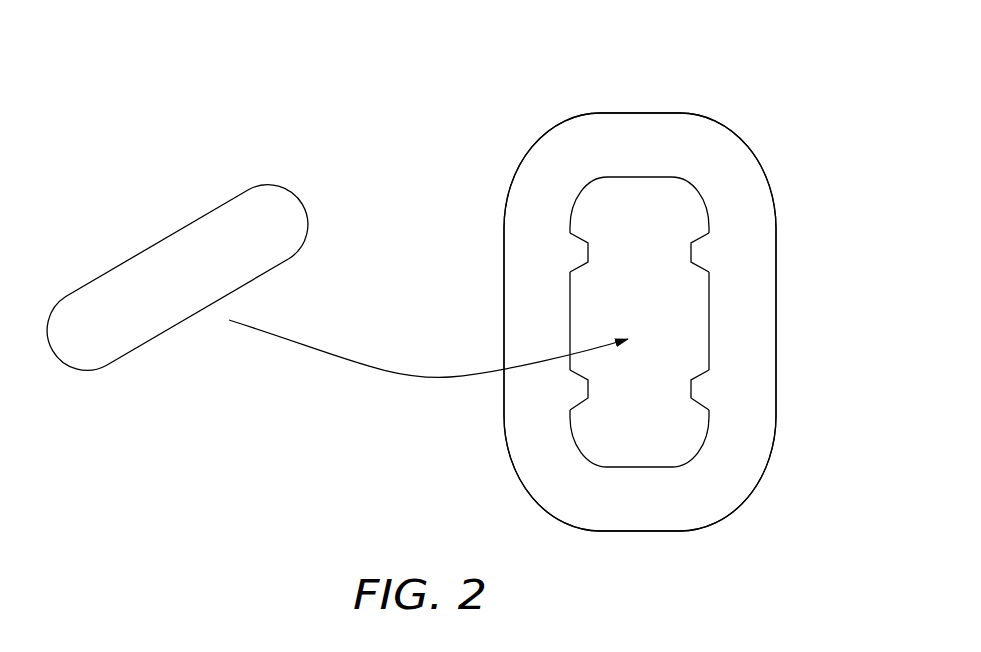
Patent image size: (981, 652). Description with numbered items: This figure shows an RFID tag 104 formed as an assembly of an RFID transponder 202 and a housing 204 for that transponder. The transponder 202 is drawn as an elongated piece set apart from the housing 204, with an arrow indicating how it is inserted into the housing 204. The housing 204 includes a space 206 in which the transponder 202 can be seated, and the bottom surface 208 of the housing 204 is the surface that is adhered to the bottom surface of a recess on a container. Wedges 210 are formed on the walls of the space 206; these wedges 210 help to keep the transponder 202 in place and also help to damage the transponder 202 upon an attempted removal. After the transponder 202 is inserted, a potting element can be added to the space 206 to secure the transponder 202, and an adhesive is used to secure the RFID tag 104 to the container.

The RFID tag 104 is at (317, 50).
The RFID transponder 202 is at (177, 232).
The housing 204 is at (643, 113).
The space 206 is at (660, 233).
The bottom surface 208 is at (582, 175).
The wedges 210 is at (577, 257).